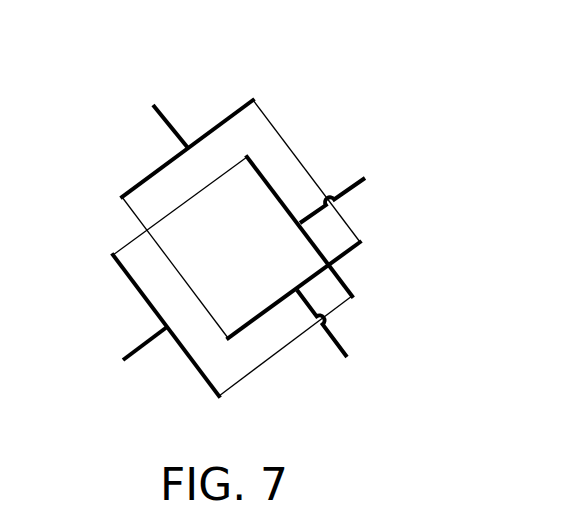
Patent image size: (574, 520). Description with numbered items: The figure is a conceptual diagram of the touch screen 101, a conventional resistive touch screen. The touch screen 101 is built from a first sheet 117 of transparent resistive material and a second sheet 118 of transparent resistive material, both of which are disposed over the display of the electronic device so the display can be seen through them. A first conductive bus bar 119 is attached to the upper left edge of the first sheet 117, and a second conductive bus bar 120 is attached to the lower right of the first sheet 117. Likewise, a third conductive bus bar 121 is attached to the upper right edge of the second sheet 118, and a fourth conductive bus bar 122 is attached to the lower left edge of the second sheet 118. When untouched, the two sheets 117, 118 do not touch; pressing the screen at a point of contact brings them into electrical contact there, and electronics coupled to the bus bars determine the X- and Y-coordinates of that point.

The touch screen 101 is at (340, 62).
The first sheet 117 is at (266, 142).
The second sheet 118 is at (248, 370).
The first conductive bus bar 119 is at (237, 111).
The second conductive bus bar 120 is at (357, 251).
The third conductive bus bar 121 is at (356, 290).
The fourth conductive bus bar 122 is at (218, 397).